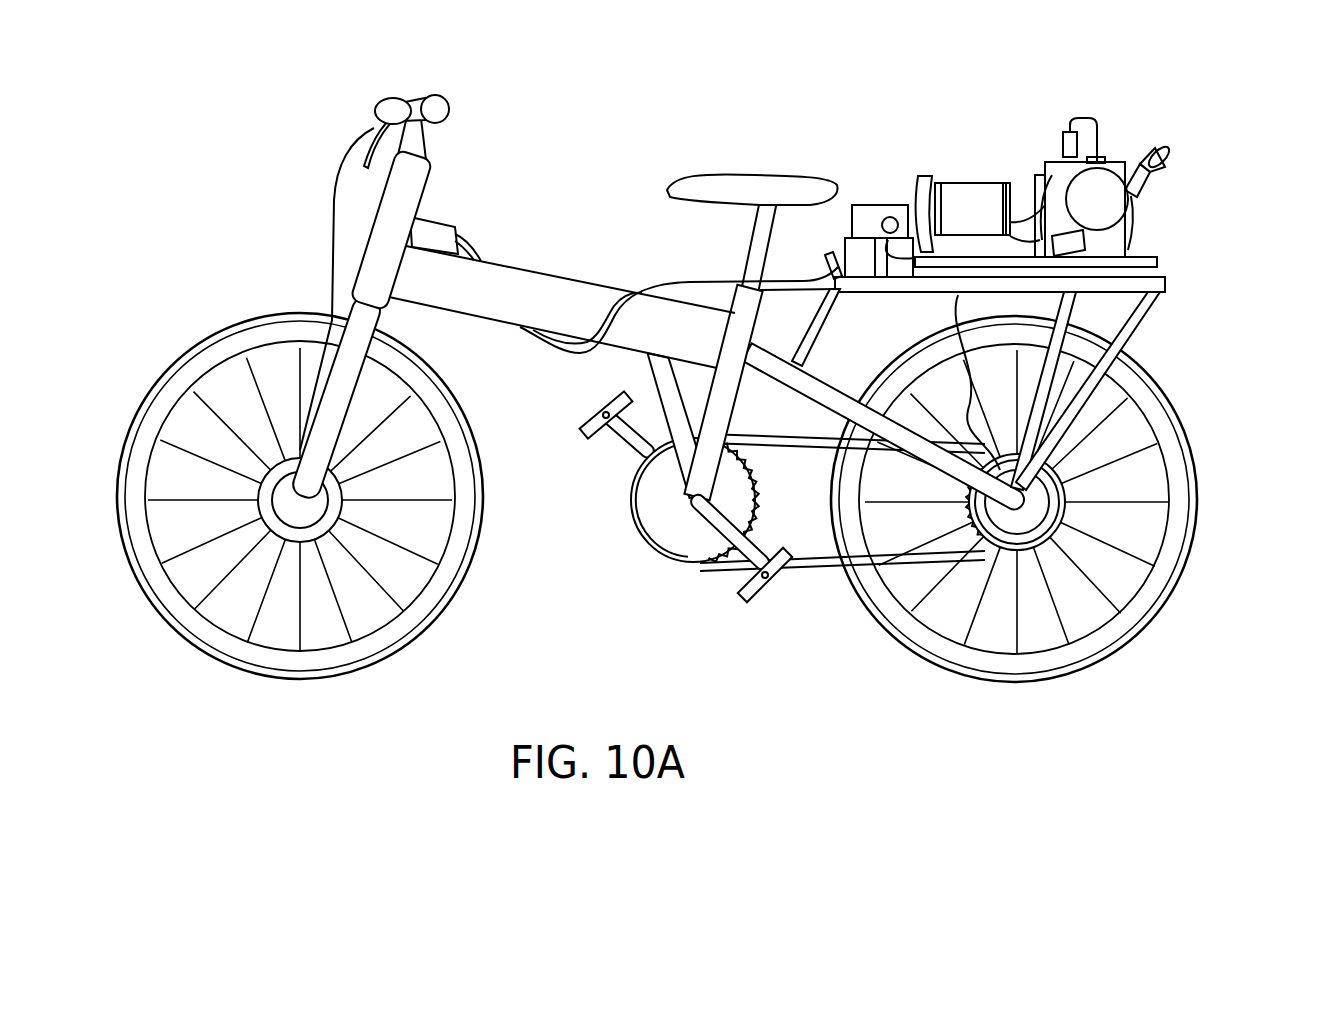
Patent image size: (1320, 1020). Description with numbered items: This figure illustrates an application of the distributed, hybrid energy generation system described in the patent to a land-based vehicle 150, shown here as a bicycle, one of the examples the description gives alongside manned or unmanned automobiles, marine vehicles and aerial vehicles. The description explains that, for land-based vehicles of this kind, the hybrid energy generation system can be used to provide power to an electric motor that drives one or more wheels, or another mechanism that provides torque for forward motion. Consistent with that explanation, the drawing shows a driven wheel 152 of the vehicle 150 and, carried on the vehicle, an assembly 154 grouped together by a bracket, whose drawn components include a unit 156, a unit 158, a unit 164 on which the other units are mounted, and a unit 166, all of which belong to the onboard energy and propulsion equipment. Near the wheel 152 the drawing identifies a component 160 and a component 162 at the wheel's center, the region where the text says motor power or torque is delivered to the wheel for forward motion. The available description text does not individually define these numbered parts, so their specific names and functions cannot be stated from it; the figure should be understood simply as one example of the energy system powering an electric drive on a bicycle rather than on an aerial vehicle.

The bicycle 150 is at (241, 133).
The rear wheel 152 is at (1197, 565).
The power generation unit 154 is at (1197, 105).
The engine 156 is at (1117, 160).
The fuel tank 158 is at (967, 205).
The drive transmission 160 is at (1048, 517).
The rear hub 162 is at (1017, 502).
The rack 164 is at (1167, 292).
The controller 166 is at (877, 220).